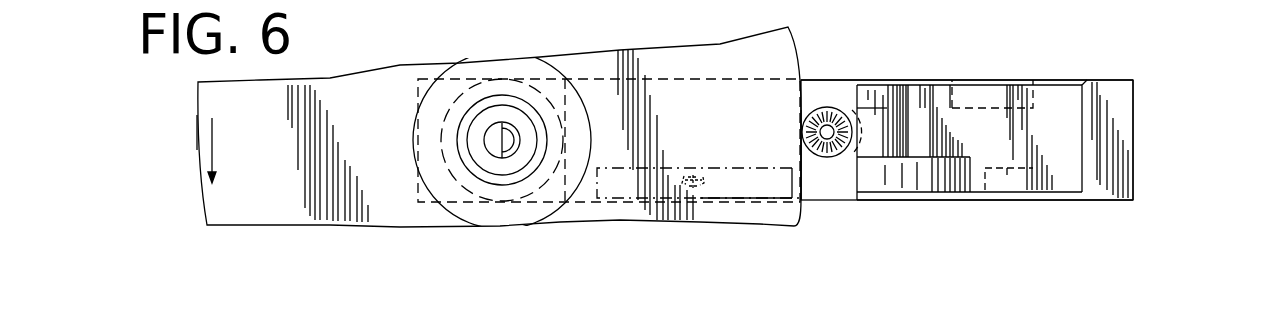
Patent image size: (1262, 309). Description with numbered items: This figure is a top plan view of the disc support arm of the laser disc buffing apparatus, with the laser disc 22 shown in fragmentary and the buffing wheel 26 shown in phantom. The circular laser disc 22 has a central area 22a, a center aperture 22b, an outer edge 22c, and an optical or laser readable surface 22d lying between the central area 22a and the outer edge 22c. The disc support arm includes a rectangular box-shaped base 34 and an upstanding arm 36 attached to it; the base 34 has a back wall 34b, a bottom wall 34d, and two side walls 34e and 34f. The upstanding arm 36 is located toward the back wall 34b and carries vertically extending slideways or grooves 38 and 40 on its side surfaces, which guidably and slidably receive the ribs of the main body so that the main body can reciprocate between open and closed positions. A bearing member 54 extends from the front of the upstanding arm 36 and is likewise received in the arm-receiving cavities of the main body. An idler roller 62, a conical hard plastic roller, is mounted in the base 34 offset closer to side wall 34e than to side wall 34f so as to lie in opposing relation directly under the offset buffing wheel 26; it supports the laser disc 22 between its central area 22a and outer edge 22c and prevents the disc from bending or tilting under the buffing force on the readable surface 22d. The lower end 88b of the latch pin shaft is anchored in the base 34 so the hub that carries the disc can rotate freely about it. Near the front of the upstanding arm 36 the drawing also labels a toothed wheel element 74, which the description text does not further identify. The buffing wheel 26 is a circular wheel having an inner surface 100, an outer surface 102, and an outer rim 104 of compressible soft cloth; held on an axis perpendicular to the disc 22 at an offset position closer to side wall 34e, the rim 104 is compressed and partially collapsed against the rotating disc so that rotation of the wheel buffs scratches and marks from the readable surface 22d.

The laser disc 22 is at (198, 224).
The central area 22a is at (437, 160).
The center aperture 22b is at (508, 190).
The outer edge 22c is at (197, 132).
The optical or laser readable surface 22d is at (345, 153).
The buffing wheel 26 is at (647, 221).
The base 34 is at (1133, 199).
The back wall 34b is at (1133, 175).
The bottom wall 34d is at (443, 0).
The side wall 34e is at (1100, 200).
The side wall 34f is at (1063, 78).
The upstanding arm 36 is at (1087, 80).
The slideway or groove 38 is at (1007, 182).
The slideway or groove 40 is at (990, 107).
The bearing member 54 is at (872, 123).
The idler roller 62 is at (697, 173).
The gear 74 is at (829, 118).
The lower end 88b is at (515, 0).
The inner surface 100 is at (745, 166).
The outer surface 102 is at (757, 198).
The outer rim 104 is at (807, 173).